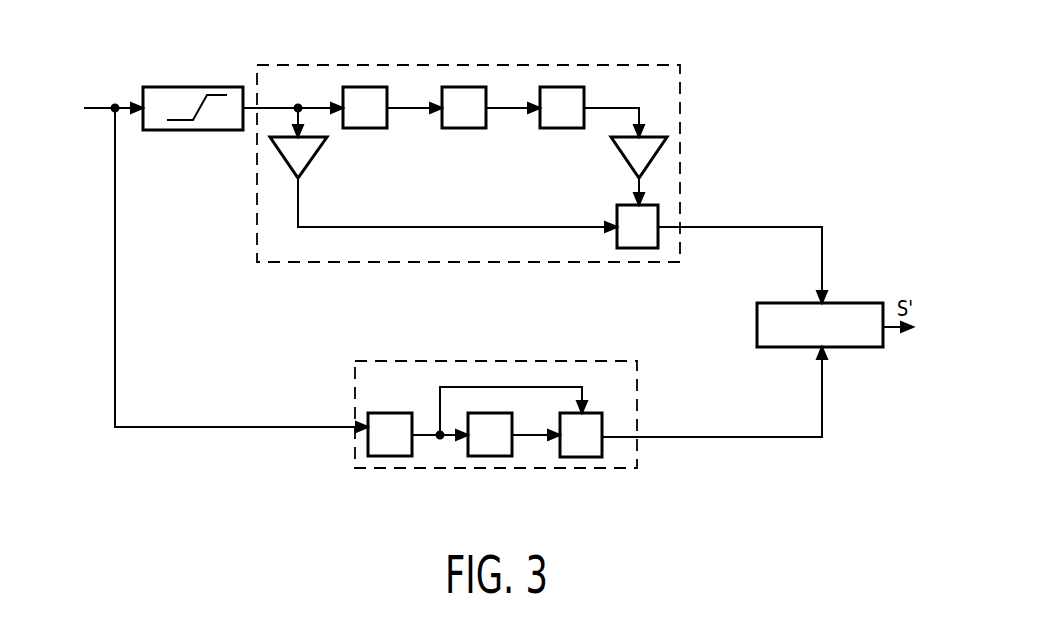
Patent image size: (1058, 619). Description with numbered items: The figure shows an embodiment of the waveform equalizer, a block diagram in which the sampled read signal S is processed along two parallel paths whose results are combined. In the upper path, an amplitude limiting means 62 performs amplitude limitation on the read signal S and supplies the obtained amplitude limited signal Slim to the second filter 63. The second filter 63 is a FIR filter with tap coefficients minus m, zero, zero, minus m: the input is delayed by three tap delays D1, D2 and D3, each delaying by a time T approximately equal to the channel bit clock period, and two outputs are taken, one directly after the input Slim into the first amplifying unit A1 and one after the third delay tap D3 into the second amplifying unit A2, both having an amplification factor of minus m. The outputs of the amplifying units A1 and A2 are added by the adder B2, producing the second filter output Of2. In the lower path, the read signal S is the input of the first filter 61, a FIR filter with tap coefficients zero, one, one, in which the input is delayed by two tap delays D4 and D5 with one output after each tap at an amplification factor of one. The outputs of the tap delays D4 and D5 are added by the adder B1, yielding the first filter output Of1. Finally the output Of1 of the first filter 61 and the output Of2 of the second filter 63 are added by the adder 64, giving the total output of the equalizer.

The read signal S is at (217, 264).
The amplitude limiting means 62 is at (225, 95).
The amplitude limited signal Slim is at (293, 96).
The first amplifying unit A1 is at (309, 165).
The first tap delay D1 is at (380, 88).
The second tap delay D2 is at (477, 88).
The third tap delay D3 is at (575, 88).
The second amplifying unit A2 is at (630, 165).
The adder B2 is at (618, 213).
The second filter 63 is at (672, 83).
The output of the second filter Of2 is at (742, 250).
The adder 64 is at (765, 315).
The first filter 61 is at (358, 382).
The tap delay D4 is at (383, 450).
The tap delay D5 is at (483, 450).
The adder B1 is at (568, 452).
The output of the first filter Of1 is at (714, 392).